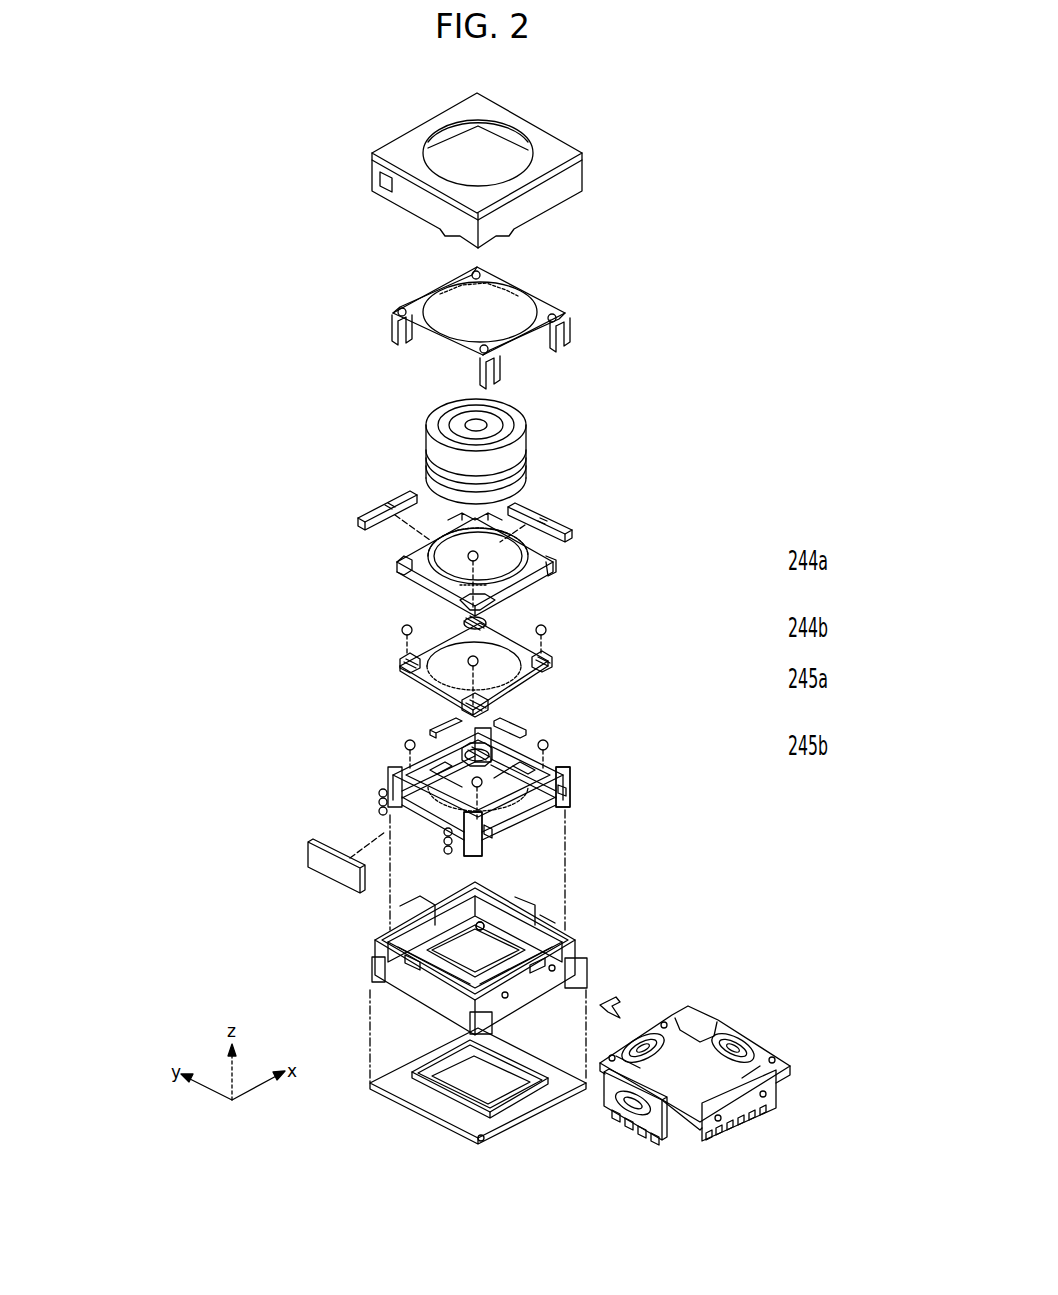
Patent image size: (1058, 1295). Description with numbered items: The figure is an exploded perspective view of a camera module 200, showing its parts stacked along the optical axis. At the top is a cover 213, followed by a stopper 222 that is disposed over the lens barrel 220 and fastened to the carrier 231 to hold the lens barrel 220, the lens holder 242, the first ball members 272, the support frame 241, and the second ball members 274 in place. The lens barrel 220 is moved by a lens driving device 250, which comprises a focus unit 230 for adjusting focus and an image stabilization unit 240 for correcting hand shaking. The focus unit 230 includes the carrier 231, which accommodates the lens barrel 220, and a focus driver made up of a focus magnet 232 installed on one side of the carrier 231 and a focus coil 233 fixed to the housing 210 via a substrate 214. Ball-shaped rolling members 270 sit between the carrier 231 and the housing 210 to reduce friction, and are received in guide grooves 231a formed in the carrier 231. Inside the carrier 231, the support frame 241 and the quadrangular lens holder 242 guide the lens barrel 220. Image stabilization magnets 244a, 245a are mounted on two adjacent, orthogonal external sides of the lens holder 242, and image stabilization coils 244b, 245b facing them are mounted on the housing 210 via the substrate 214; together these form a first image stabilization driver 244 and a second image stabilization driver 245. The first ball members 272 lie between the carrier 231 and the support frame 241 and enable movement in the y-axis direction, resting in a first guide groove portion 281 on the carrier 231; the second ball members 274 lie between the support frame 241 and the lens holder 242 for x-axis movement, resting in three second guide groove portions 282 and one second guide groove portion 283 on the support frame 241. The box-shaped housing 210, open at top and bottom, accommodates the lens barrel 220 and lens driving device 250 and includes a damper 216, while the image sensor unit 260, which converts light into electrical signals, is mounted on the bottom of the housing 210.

The camera module 200 is at (648, 180).
The cover 213 is at (398, 140).
The stopper 222 is at (526, 305).
The lens barrel 220 is at (430, 432).
The image stabilization magnet 244a is at (372, 508).
The image stabilization magnet 245a is at (560, 520).
The lens holder 242 is at (420, 555).
The second guide groove portion 283 is at (490, 622).
The support frame 241 is at (436, 648).
The second guide groove portions 282 is at (400, 660).
The second ball members 274 is at (547, 630).
The first guide groove portion 281 is at (502, 726).
The focus unit 230 is at (353, 790).
The first ball members 272 is at (549, 745).
The carrier 231 is at (572, 782).
The guide grooves 231a is at (482, 850).
The rolling members 270 is at (378, 792).
The image stabilization unit 240 is at (352, 655).
The lens driving device 250 is at (254, 682).
The focus magnet 232 is at (335, 872).
The housing 210 is at (375, 958).
The damper 216 is at (478, 922).
The image sensor unit 260 is at (418, 1126).
The substrate 214 is at (710, 1030).
The image stabilization coil 244b is at (640, 1040).
The image stabilization coil 245b is at (745, 1052).
The focus coil 233 is at (600, 1115).
The first image stabilization driver 244 is at (786, 552).
The second image stabilization driver 245 is at (786, 672).